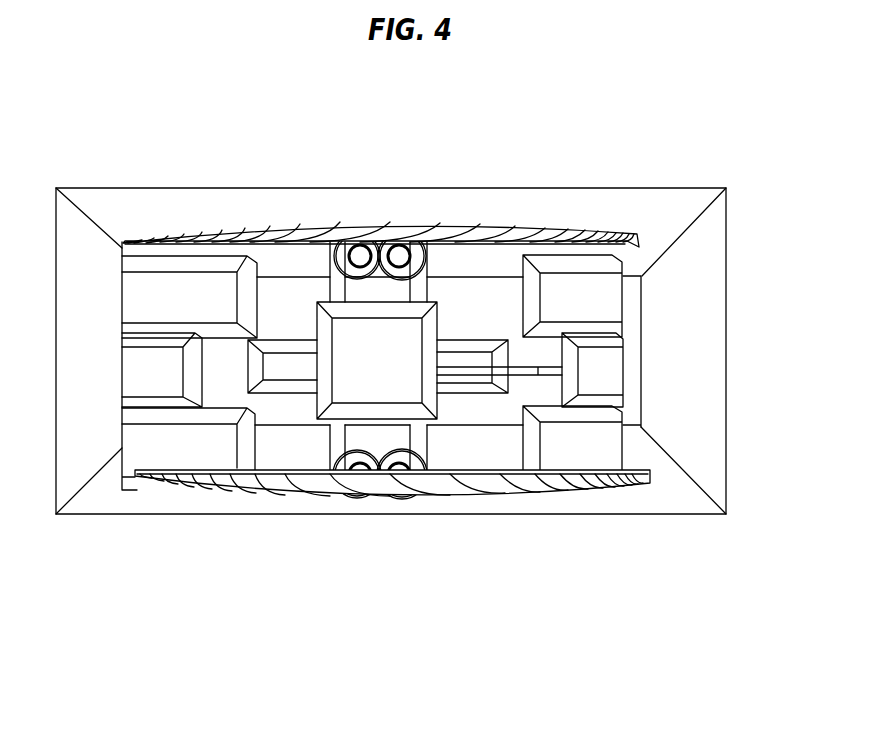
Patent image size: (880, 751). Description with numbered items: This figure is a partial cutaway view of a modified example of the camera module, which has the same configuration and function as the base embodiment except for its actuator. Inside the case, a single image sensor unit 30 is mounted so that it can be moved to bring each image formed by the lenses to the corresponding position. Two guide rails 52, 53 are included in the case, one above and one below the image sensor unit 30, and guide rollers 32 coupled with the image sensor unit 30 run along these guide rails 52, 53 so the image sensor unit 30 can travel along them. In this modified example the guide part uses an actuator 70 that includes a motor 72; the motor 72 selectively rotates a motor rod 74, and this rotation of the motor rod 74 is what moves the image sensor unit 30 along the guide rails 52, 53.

The image sensor unit 30 is at (377, 320).
The guide roller 32 is at (333, 257).
The guide rail 52 is at (600, 232).
The guide rail 53 is at (652, 486).
The actuator 70 is at (530, 490).
The motor 72 is at (597, 408).
The motor rod 74 is at (522, 374).